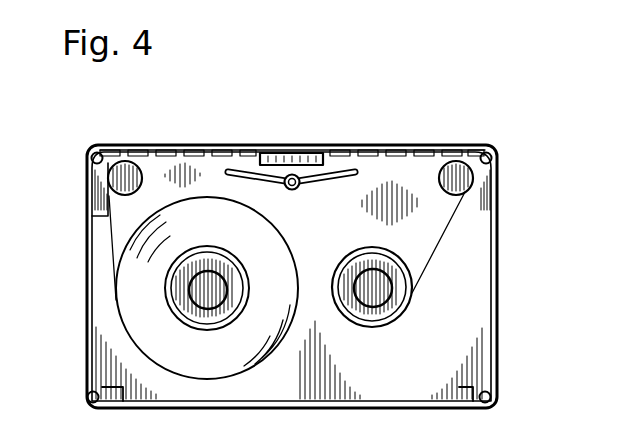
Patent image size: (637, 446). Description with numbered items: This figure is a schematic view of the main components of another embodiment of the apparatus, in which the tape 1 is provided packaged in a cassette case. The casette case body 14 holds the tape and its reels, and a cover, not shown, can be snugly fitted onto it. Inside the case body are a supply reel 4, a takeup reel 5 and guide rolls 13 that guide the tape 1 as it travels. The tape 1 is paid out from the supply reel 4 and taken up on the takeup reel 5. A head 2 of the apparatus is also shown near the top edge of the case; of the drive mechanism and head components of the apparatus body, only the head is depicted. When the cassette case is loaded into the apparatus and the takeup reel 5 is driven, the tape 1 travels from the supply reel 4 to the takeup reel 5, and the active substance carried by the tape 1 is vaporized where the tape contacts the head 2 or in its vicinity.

The tape 1 is at (108, 217).
The head 2 is at (300, 156).
The supply reel 4 is at (177, 295).
The takeup reel 5 is at (403, 278).
The guide roll 13 is at (130, 168).
The casette case body 14 is at (497, 236).